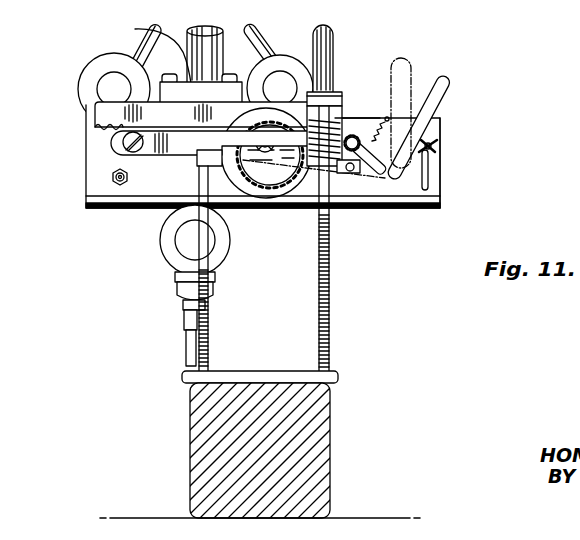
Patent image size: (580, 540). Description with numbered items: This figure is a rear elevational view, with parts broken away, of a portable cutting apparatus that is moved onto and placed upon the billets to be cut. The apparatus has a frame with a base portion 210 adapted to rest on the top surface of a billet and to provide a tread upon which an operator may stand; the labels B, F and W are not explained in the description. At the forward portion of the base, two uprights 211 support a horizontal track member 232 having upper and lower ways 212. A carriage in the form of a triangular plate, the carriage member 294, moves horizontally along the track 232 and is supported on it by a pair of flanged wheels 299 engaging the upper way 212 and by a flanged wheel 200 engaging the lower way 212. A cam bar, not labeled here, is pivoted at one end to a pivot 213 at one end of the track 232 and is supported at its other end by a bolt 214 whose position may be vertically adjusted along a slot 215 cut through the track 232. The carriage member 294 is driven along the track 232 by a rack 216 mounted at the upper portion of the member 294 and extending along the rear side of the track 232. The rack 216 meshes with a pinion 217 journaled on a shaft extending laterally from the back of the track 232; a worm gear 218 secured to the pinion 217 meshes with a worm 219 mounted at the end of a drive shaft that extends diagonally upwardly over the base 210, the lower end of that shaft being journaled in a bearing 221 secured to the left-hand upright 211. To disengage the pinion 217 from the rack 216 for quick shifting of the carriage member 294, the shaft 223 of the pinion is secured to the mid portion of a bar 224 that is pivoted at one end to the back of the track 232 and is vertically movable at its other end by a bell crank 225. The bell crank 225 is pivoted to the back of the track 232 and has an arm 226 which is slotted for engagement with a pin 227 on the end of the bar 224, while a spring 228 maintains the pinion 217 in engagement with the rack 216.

The flanged wheel 200 is at (170, 245).
The base portion 210 is at (256, 371).
The uprights 211 is at (209, 262).
The upper and lower ways 212 is at (150, 212).
The pivot 213 is at (112, 178).
The bolt 214 is at (436, 147).
The slot 215 is at (429, 176).
The rack 216 is at (97, 127).
The pinion 217 is at (272, 120).
The worm gear 218 is at (258, 182).
The worm 219 is at (352, 128).
The bearing 221 is at (338, 100).
The shaft 223 is at (269, 153).
The bar 224 is at (183, 150).
The bell crank 225 is at (440, 100).
The arm 226 is at (374, 180).
The pin 227 is at (355, 175).
The spring 228 is at (386, 117).
The track member 232 is at (410, 190).
The carriage member 294 is at (147, 41).
The flanged wheels 299 is at (90, 86).
The block B is at (176, 276).
The feed rod F is at (330, 293).
The work container W is at (205, 433).